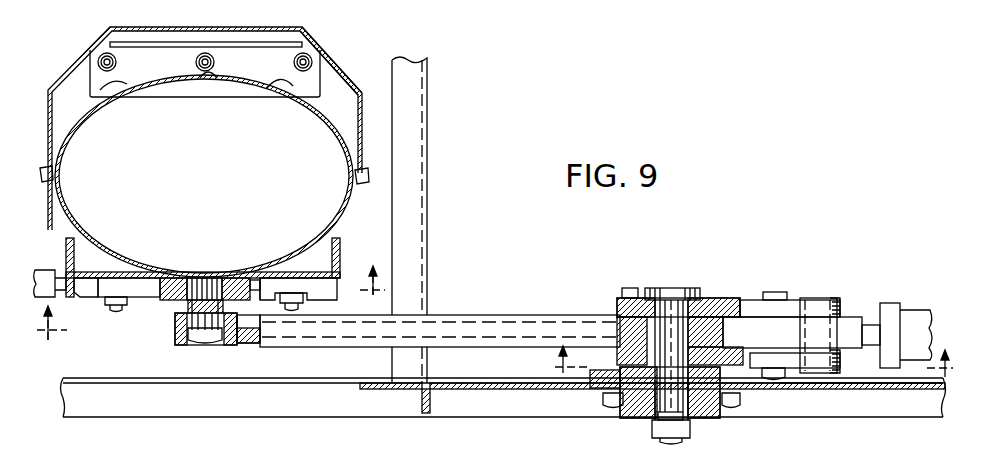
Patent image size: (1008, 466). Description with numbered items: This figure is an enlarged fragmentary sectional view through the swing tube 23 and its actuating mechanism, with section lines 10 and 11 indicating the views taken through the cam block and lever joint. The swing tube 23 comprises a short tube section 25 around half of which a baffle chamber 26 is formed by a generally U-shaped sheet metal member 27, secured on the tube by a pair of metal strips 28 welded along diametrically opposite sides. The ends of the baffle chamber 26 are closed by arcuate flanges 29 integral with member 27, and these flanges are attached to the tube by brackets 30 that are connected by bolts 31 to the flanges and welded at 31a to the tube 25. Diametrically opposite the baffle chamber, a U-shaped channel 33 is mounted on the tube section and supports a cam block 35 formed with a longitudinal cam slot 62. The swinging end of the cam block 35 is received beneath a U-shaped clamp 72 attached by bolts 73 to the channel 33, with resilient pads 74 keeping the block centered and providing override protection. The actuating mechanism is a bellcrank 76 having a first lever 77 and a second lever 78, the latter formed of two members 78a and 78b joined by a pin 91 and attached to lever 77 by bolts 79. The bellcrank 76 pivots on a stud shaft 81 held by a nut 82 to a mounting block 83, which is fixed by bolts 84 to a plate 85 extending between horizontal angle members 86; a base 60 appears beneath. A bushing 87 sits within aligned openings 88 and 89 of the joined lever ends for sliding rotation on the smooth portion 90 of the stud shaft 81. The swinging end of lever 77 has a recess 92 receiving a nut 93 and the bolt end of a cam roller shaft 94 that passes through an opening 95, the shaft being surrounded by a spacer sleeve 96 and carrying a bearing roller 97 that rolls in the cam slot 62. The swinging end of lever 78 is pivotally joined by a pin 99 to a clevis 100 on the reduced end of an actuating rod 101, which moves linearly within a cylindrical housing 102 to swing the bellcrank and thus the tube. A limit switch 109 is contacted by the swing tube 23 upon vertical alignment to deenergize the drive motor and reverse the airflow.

The swing tube 23 is at (357, 68).
The tube section 25 is at (325, 115).
The baffle chamber 26 is at (344, 77).
The U-shaped sheet metal member 27 is at (72, 63).
The metal strips 28 is at (43, 182).
The arcuate flanges 29 is at (345, 107).
The brackets 30 is at (165, 62).
The bolts 31 is at (306, 58).
The weld 31a is at (267, 82).
The U-shaped channel 33 is at (322, 272).
The cam block 35 is at (247, 271).
The base plate 60 is at (503, 422).
The cam slot 62 is at (262, 300).
The U-shaped clamp 72 is at (314, 301).
The bolts 73 is at (108, 307).
The resilient pads 74 is at (160, 283).
The bellcrank 76 is at (688, 268).
The first lever 77 is at (490, 321).
The second lever 78 is at (795, 296).
The lever member 78a is at (832, 299).
The lever member 78b is at (835, 356).
The bolts 79 is at (631, 288).
The stud shaft 81 is at (673, 287).
The nut 82 is at (688, 430).
The mounting block 83 is at (615, 420).
The bolts 84 is at (605, 403).
The plate 85 is at (542, 390).
The angle members 86 is at (897, 405).
The bushing 87 is at (712, 300).
The opening 88 is at (706, 334).
The opening 89 is at (625, 305).
The smooth portion 90 is at (665, 383).
The pin 91 is at (776, 291).
The recess 92 is at (193, 344).
The nut 93 is at (214, 330).
The cam roller shaft 94 is at (180, 325).
The opening 95 is at (246, 333).
The spacer sleeve 96 is at (186, 307).
The bearing roller 97 is at (205, 290).
The pin 99 is at (822, 299).
The clevis 100 is at (848, 326).
The actuating rod 101 is at (876, 337).
The cylindrical housing 102 is at (918, 324).
The limit switch 109 is at (48, 270).
The section line 10 is at (213, 312).
The section line 11 is at (756, 366).